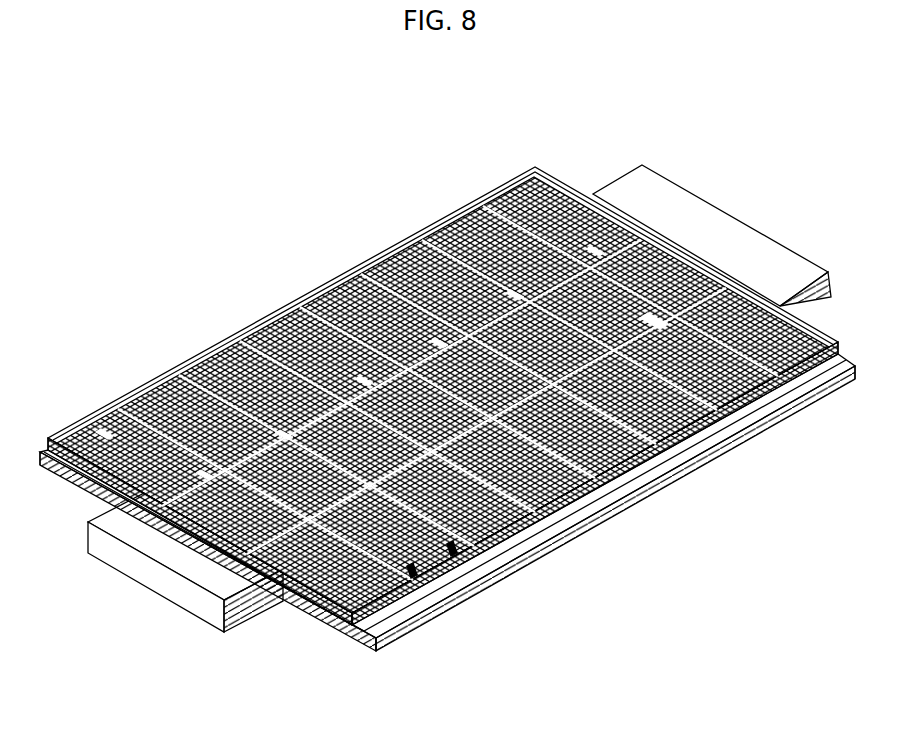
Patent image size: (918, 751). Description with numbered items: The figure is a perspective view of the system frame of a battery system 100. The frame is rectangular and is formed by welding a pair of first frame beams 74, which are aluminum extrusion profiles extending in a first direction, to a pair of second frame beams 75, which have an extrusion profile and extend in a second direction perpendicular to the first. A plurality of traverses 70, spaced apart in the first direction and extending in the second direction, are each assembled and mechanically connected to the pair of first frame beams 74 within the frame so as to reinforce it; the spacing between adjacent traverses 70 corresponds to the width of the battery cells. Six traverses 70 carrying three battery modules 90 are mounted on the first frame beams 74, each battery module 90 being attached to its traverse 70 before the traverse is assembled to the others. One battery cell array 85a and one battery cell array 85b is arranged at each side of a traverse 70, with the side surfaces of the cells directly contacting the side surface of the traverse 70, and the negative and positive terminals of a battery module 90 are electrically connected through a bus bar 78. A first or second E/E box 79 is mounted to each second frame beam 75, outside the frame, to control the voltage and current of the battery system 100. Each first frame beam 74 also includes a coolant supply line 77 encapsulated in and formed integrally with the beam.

The battery system 100 is at (145, 148).
The traverse 70 is at (513, 297).
The first frame beam 74 is at (308, 290).
The second frame beam 75 is at (305, 612).
The coolant supply line 77 is at (357, 628).
The bus bar 78 is at (652, 322).
The E/E box 79 is at (760, 255).
The battery cell array 85a is at (412, 575).
The battery cell array 85b is at (452, 552).
The battery module 90 is at (105, 442).